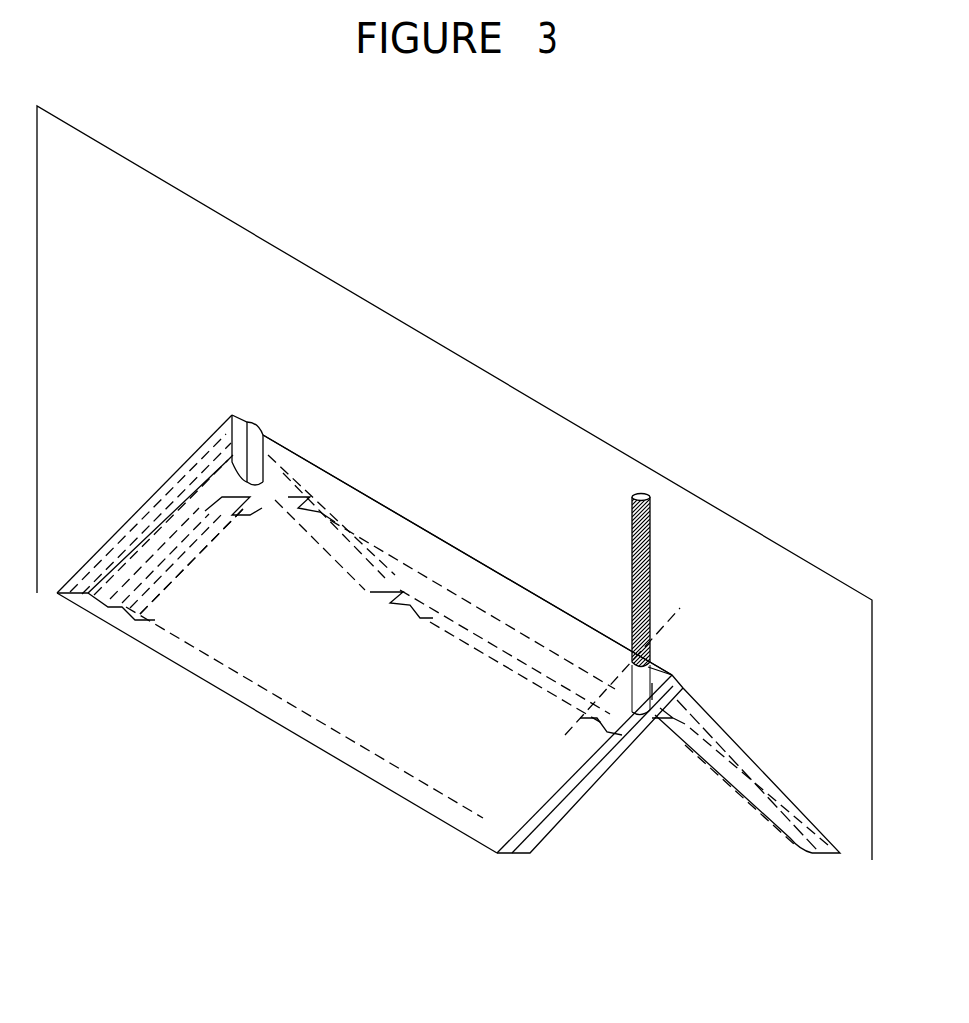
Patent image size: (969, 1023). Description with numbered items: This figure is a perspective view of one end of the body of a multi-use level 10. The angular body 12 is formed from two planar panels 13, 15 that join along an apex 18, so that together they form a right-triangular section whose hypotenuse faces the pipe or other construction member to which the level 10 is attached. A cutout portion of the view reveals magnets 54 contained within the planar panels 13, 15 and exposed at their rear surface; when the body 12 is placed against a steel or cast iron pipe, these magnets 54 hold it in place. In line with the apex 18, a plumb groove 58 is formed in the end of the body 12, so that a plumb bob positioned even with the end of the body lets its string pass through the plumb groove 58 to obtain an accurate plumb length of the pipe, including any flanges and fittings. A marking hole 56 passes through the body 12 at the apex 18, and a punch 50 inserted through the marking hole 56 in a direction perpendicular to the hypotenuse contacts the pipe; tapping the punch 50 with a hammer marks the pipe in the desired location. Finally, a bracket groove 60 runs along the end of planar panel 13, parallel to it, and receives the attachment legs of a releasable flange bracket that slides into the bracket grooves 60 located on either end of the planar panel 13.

The multi-use level 10 is at (492, 342).
The angular body 12 is at (397, 535).
The planar panel 13 is at (465, 577).
The planar panel 15 is at (343, 678).
The apex 18 is at (387, 505).
The punch 50 is at (641, 497).
The magnets 54 is at (530, 795).
The marking hole 56 is at (640, 683).
The plumb groove 58 is at (666, 697).
The bracket groove 60 is at (592, 772).